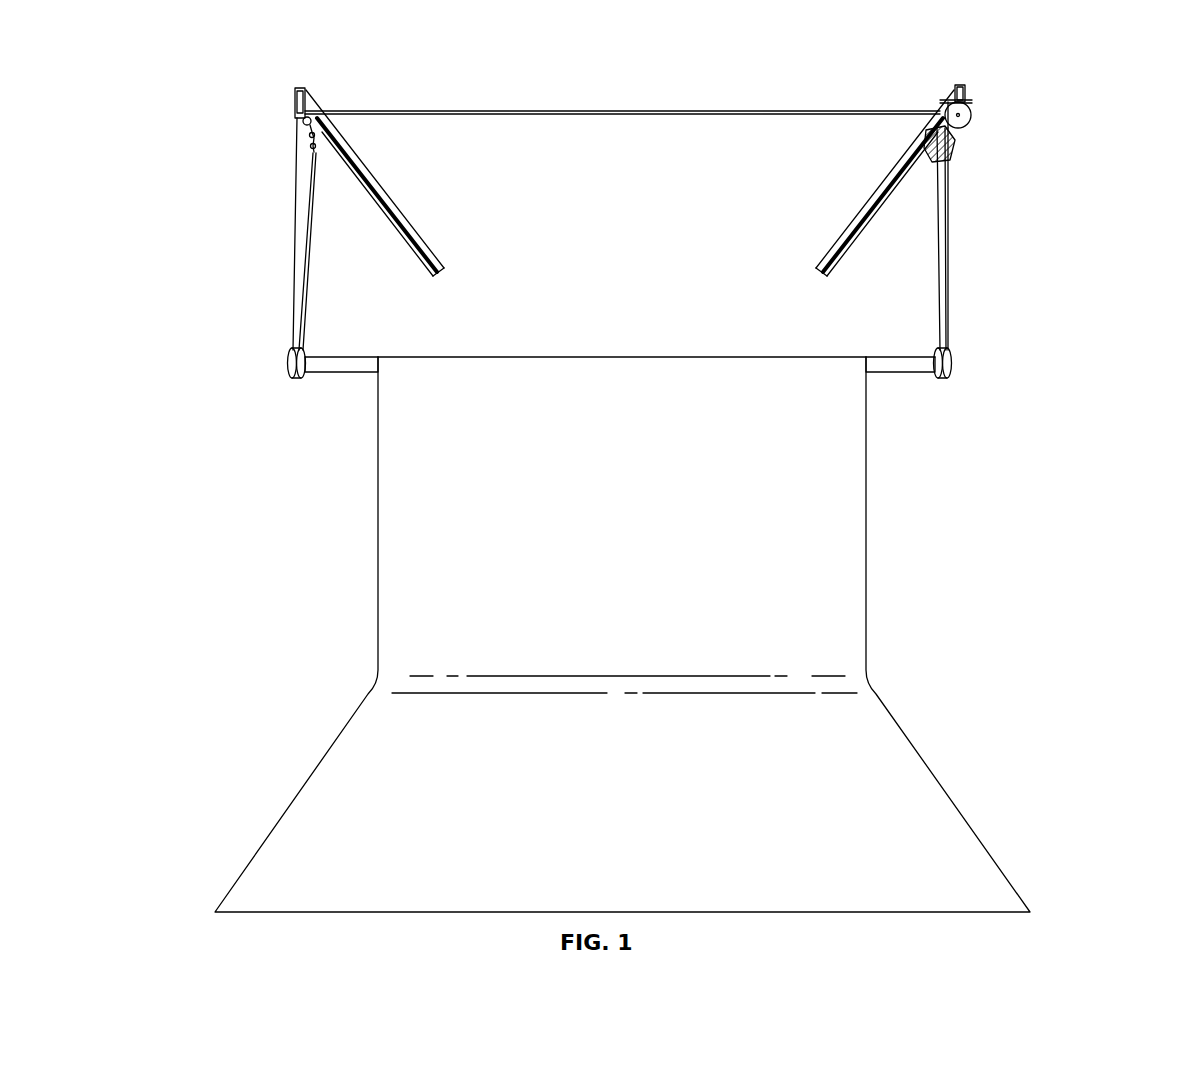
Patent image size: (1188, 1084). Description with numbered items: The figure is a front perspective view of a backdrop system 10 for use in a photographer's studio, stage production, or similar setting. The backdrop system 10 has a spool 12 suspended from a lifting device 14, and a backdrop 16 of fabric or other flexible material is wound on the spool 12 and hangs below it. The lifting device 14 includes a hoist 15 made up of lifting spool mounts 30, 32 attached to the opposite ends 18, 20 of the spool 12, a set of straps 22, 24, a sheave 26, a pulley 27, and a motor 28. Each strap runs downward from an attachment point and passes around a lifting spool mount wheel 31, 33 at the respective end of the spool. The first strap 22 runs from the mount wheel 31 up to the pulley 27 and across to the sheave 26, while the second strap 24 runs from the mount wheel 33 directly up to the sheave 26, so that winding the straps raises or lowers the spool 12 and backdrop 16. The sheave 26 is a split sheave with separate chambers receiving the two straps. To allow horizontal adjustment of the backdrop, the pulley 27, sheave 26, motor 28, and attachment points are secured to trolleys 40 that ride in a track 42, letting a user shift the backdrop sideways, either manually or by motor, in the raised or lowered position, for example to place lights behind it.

The backdrop system 10 is at (667, 472).
The spool 12 is at (620, 362).
The lifting device 14 is at (1022, 239).
The hoist 15 is at (970, 64).
The backdrop 16 is at (624, 549).
The first end of spool 18 is at (325, 368).
The second end of spool 20 is at (903, 355).
The first strap 22 is at (314, 255).
The second strap 24 is at (948, 292).
The sheave 26 is at (975, 119).
The pulley 27 is at (286, 117).
The motor 28 is at (950, 151).
The first lifting spool mount 30 is at (264, 370).
The first lifting spool mount wheel 31 is at (291, 374).
The second lifting spool mount 32 is at (975, 397).
The second lifting spool mount wheel 33 is at (952, 371).
The trolley 40 is at (318, 122).
The track 42 is at (848, 213).